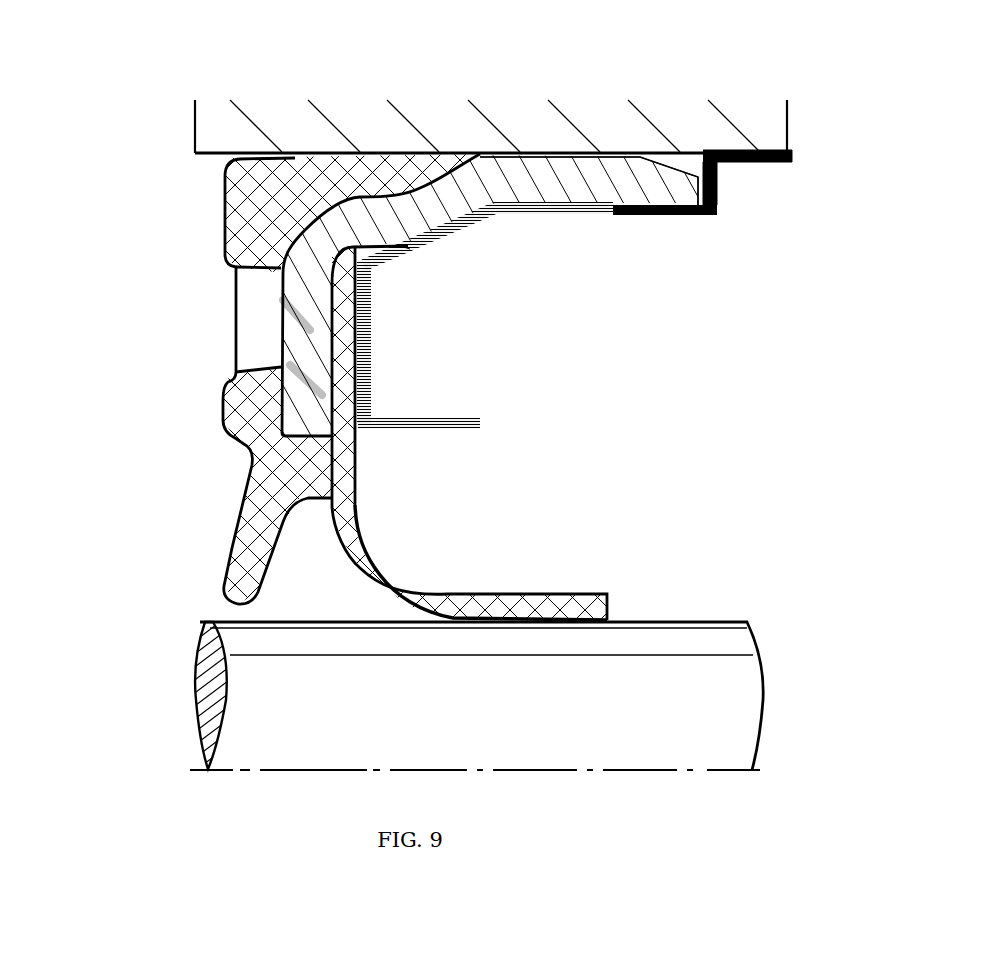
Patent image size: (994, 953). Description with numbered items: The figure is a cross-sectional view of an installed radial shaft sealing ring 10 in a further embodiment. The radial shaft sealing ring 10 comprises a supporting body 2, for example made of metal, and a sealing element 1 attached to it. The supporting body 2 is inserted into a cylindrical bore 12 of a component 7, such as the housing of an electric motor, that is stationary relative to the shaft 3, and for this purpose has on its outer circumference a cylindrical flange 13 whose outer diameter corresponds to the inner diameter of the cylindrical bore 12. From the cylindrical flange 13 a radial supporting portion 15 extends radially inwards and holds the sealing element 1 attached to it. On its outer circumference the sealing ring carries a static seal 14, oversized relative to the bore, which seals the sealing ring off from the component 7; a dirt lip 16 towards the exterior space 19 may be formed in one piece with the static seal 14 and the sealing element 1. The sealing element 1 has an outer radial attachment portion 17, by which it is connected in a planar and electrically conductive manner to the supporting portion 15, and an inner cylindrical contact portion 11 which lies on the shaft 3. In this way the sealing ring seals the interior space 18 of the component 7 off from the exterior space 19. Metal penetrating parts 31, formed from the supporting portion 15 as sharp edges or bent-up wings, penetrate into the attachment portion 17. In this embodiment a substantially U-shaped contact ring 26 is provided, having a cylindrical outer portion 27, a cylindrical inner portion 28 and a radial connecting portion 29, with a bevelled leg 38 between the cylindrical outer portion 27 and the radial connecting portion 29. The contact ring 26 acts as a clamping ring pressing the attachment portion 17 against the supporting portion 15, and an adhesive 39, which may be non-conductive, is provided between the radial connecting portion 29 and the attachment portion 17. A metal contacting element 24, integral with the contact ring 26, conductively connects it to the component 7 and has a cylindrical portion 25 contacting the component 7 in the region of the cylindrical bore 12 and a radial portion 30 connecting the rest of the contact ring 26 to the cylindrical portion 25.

The sealing element 1 is at (378, 551).
The supporting body 2 is at (457, 203).
The shaft 3 is at (738, 709).
The component 7 is at (608, 128).
The radial shaft sealing ring 10 is at (130, 512).
The inner cylindrical contact portion 11 is at (531, 610).
The cylindrical bore 12 is at (212, 156).
The cylindrical flange 13 is at (553, 183).
The static seal 14 is at (353, 178).
The radial supporting portion 15 is at (312, 420).
The dirt lip 16 is at (257, 553).
The outer radial attachment portion 17 is at (345, 455).
The interior space 18 is at (675, 441).
The exterior space 19 is at (120, 371).
The contacting element 24 is at (702, 224).
The cylindrical portion 25 is at (763, 163).
The contact ring 26 is at (413, 267).
The cylindrical outer portion 27 is at (547, 158).
The cylindrical inner portion 28 is at (427, 430).
The radial connecting portion 29 is at (372, 343).
The radial portion 30 is at (713, 183).
The penetrating parts 31 is at (307, 323).
The bevelled leg 38 is at (400, 246).
The adhesive 39 is at (358, 397).